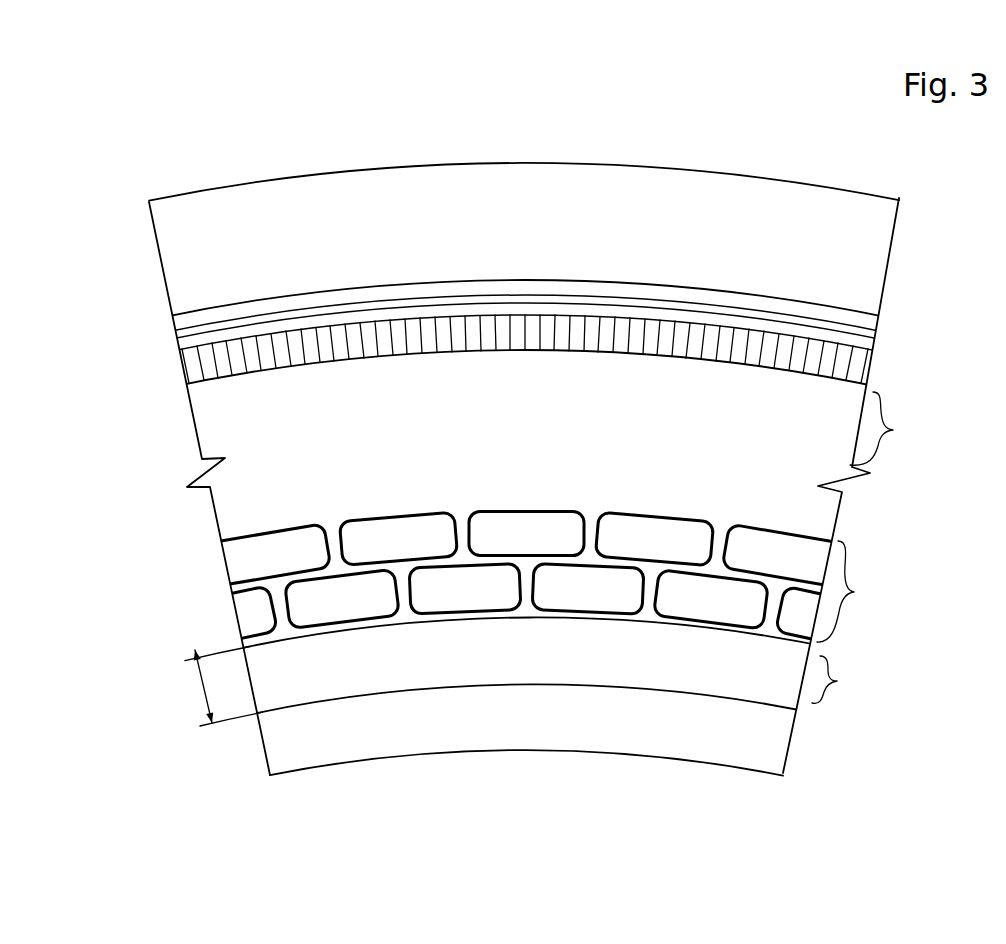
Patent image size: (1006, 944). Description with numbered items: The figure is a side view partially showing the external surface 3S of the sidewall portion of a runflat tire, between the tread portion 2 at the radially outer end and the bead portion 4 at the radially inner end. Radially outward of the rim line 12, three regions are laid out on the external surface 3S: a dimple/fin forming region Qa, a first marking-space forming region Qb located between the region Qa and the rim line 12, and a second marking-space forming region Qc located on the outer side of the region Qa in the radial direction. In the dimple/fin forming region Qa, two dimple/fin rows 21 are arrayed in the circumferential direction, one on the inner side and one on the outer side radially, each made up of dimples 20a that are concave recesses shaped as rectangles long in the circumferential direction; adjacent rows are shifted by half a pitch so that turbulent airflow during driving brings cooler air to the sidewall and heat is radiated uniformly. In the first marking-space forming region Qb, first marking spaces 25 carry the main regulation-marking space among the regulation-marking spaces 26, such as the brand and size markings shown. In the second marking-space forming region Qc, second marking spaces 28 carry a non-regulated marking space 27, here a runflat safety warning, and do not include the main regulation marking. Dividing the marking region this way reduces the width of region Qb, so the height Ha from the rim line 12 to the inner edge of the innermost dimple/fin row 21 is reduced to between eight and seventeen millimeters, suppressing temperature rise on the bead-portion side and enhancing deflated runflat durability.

The tread portion 2 is at (825, 208).
The external surface 3S is at (215, 418).
The bead portion 4 is at (275, 755).
The rim line 12 is at (723, 702).
The dimple 20a is at (778, 552).
The dimple/fin row 21 is at (212, 565).
The first marking space 25 is at (547, 677).
The regulation-marking space 26 is at (323, 695).
The non-regulated marking space 27 is at (290, 702).
The second marking space 28 is at (557, 362).
The height Ha is at (202, 688).
The dimple/fin forming region Qa is at (858, 591).
The first marking-space forming region Qb is at (849, 679).
The second marking-space forming region Qc is at (893, 428).